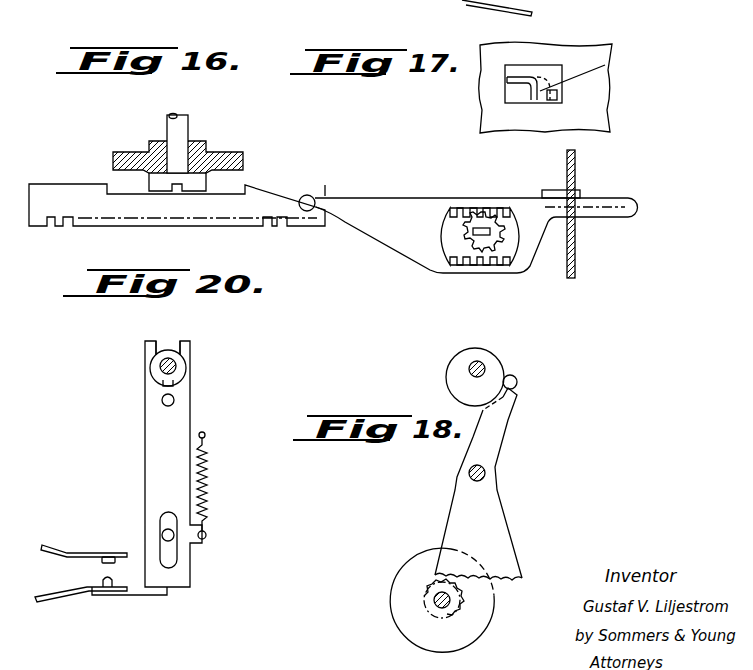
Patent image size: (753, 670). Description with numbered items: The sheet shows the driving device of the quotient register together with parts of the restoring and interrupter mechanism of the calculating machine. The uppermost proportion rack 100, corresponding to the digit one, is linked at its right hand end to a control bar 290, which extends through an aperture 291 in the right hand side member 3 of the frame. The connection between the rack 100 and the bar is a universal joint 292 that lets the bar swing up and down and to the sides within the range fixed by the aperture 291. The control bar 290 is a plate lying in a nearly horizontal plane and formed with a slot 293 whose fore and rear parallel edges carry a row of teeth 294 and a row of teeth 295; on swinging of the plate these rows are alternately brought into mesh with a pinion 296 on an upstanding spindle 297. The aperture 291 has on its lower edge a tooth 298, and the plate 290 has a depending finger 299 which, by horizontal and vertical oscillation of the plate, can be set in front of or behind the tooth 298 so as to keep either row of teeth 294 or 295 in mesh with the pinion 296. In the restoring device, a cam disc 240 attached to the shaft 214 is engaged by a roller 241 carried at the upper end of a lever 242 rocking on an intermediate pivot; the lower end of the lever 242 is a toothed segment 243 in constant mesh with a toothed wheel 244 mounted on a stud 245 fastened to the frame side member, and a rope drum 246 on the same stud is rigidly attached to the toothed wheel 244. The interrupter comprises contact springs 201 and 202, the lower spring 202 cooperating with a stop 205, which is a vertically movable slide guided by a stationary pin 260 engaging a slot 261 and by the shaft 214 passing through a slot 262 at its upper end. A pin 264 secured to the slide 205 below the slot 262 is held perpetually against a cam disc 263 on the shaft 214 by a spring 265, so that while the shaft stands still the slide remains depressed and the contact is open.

In FIG. 16, the right hand side member 3 is at (577, 258).
In FIG. 17, the right hand side member 3 is at (590, 50).
In FIG. 16, the proportion rack 100 is at (284, 190).
In FIG. 20, the contact spring 201 is at (60, 550).
In FIG. 20, the contact spring 202 is at (66, 594).
In FIG. 20, the stop 205 is at (155, 437).
In FIG. 20, the shaft 214 is at (180, 366).
In FIG. 18, the shaft 214 is at (486, 366).
In FIG. 18, the cam disc 240 is at (447, 374).
In FIG. 18, the roller 241 is at (518, 383).
In FIG. 18, the lever 242 is at (494, 445).
In FIG. 18, the toothed segment 243 is at (507, 582).
In FIG. 18, the toothed wheel 244 is at (462, 610).
In FIG. 18, the stud 245 is at (435, 605).
In FIG. 18, the rope drum 246 is at (427, 560).
In FIG. 20, the stationary pin 260 is at (161, 532).
In FIG. 20, the slot 261 is at (169, 558).
In FIG. 20, the slot 262 is at (164, 343).
In FIG. 20, the cam disc 263 is at (150, 373).
In FIG. 20, the pin 264 is at (175, 398).
In FIG. 20, the spring 265 is at (208, 476).
In FIG. 16, the control bar 290 is at (387, 202).
In FIG. 17, the control bar 290 is at (507, 80).
In FIG. 16, the aperture 291 is at (572, 172).
In FIG. 17, the aperture 291 is at (528, 70).
In FIG. 16, the universal joint 292 is at (309, 210).
In FIG. 16, the slot 293 is at (453, 240).
In FIG. 16, the row of teeth 294 is at (482, 262).
In FIG. 16, the row of teeth 295 is at (507, 212).
In FIG. 16, the pinion 296 is at (501, 236).
In FIG. 16, the spindle 297 is at (480, 229).
In FIG. 17, the tooth 298 is at (595, 66).
In FIG. 17, the depending finger 299 is at (540, 91).